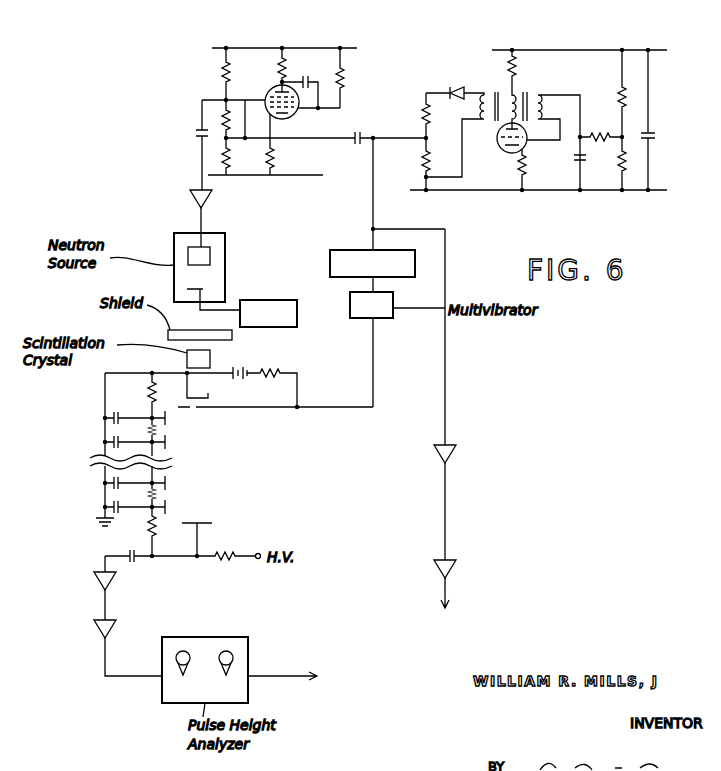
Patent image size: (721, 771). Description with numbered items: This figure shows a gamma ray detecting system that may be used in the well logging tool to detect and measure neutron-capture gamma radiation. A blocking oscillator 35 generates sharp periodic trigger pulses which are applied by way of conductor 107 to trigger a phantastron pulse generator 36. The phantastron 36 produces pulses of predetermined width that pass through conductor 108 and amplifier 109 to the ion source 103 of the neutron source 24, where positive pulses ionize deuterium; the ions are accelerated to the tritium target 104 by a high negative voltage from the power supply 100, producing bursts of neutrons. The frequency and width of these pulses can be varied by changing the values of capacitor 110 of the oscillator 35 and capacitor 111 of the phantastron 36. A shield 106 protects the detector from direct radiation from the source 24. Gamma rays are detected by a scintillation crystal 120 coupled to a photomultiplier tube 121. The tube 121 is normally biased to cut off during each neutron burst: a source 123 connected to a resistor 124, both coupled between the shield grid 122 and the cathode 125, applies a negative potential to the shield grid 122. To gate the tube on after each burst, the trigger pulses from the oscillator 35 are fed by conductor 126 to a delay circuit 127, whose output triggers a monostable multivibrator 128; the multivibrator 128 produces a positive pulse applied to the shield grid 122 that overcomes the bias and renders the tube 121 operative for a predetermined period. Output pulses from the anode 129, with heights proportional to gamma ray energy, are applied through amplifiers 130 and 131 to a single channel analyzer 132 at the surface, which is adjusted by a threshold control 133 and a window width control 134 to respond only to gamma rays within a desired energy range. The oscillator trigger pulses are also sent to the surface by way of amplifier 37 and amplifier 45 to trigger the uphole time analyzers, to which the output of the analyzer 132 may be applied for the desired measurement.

The neutron source 24 is at (174, 278).
The blocking oscillator 35 is at (552, 71).
The phantastron pulse generator 36 is at (186, 76).
The amplifier 37 is at (450, 445).
The amplifier 45 is at (452, 568).
The power supply 100 is at (273, 300).
The ion source 103 is at (188, 253).
The target 104 is at (205, 289).
The shield 106 is at (167, 333).
The conductor 107 is at (340, 138).
The conductor 108 is at (202, 177).
The amplifier 109 is at (210, 198).
The capacitor 110 is at (570, 156).
The capacitor 111 is at (305, 74).
The scintillation crystal 120 is at (187, 357).
The photomultiplier tube 121 is at (65, 470).
The shield grid 122 is at (200, 408).
The source 123 is at (241, 368).
The resistor 124 is at (278, 370).
The cathode 125 is at (200, 396).
The conductor 126 is at (371, 231).
The delay circuit 127 is at (330, 253).
The monostable multivibrator 128 is at (382, 320).
The anode 129 is at (203, 521).
The amplifier 130 is at (92, 582).
The amplifier 131 is at (92, 628).
The single channel analyzer 132 is at (222, 637).
The threshold control 133 is at (183, 668).
The window width control 134 is at (232, 658).